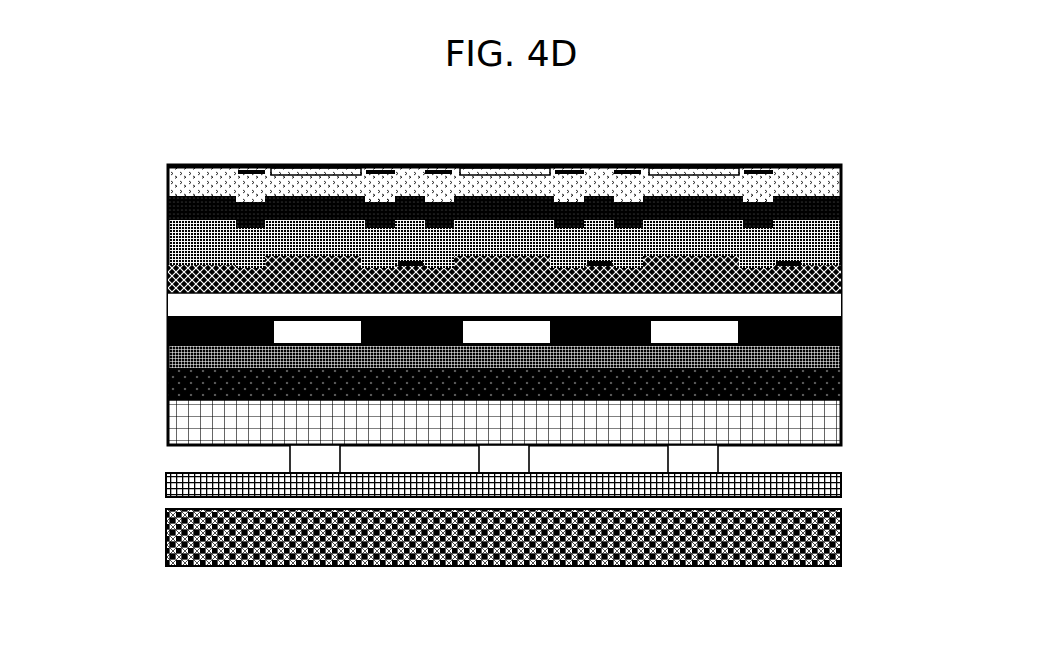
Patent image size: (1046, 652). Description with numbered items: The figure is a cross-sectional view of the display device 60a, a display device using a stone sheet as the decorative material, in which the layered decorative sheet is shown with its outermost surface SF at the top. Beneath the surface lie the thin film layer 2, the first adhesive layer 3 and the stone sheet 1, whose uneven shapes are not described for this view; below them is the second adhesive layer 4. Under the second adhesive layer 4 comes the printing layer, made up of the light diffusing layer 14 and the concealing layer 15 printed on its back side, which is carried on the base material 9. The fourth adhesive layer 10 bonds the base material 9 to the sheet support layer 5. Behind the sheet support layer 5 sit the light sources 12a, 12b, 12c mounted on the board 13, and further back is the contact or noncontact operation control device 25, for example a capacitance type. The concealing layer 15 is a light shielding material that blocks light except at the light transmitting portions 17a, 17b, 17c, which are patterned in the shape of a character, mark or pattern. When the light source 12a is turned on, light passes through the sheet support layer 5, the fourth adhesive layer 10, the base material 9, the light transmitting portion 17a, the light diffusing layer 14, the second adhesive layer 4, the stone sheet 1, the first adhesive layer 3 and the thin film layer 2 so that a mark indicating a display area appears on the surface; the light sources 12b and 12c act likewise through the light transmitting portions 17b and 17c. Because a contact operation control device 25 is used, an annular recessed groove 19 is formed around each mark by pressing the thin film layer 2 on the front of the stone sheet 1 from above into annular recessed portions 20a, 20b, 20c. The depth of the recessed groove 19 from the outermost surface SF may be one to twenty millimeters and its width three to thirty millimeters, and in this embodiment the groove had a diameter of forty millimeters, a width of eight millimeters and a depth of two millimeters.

The display device 60a is at (78, 128).
The outermost surface SF is at (504, 148).
The thin film layer 2 is at (787, 175).
The first adhesive layer 3 is at (835, 197).
The stone sheet 1 is at (800, 238).
The second adhesive layer 4 is at (835, 268).
The light diffusing layer 14 is at (800, 299).
The concealing layer 15 is at (835, 327).
The base material 9 is at (800, 352).
The fourth adhesive layer 10 is at (835, 390).
The sheet support layer 5 is at (808, 418).
The board 13 is at (835, 479).
The operation control device 25 is at (820, 533).
The recessed groove 19 is at (372, 192).
The annular recessed portion 20a is at (372, 163).
The annular recessed portion 20b is at (561, 163).
The annular recessed portion 20c is at (750, 163).
The light transmitting portion 17a is at (310, 320).
The light transmitting portion 17b is at (499, 320).
The light transmitting portion 17c is at (688, 320).
The light source 12a is at (307, 452).
The light source 12b is at (496, 452).
The light source 12c is at (685, 452).